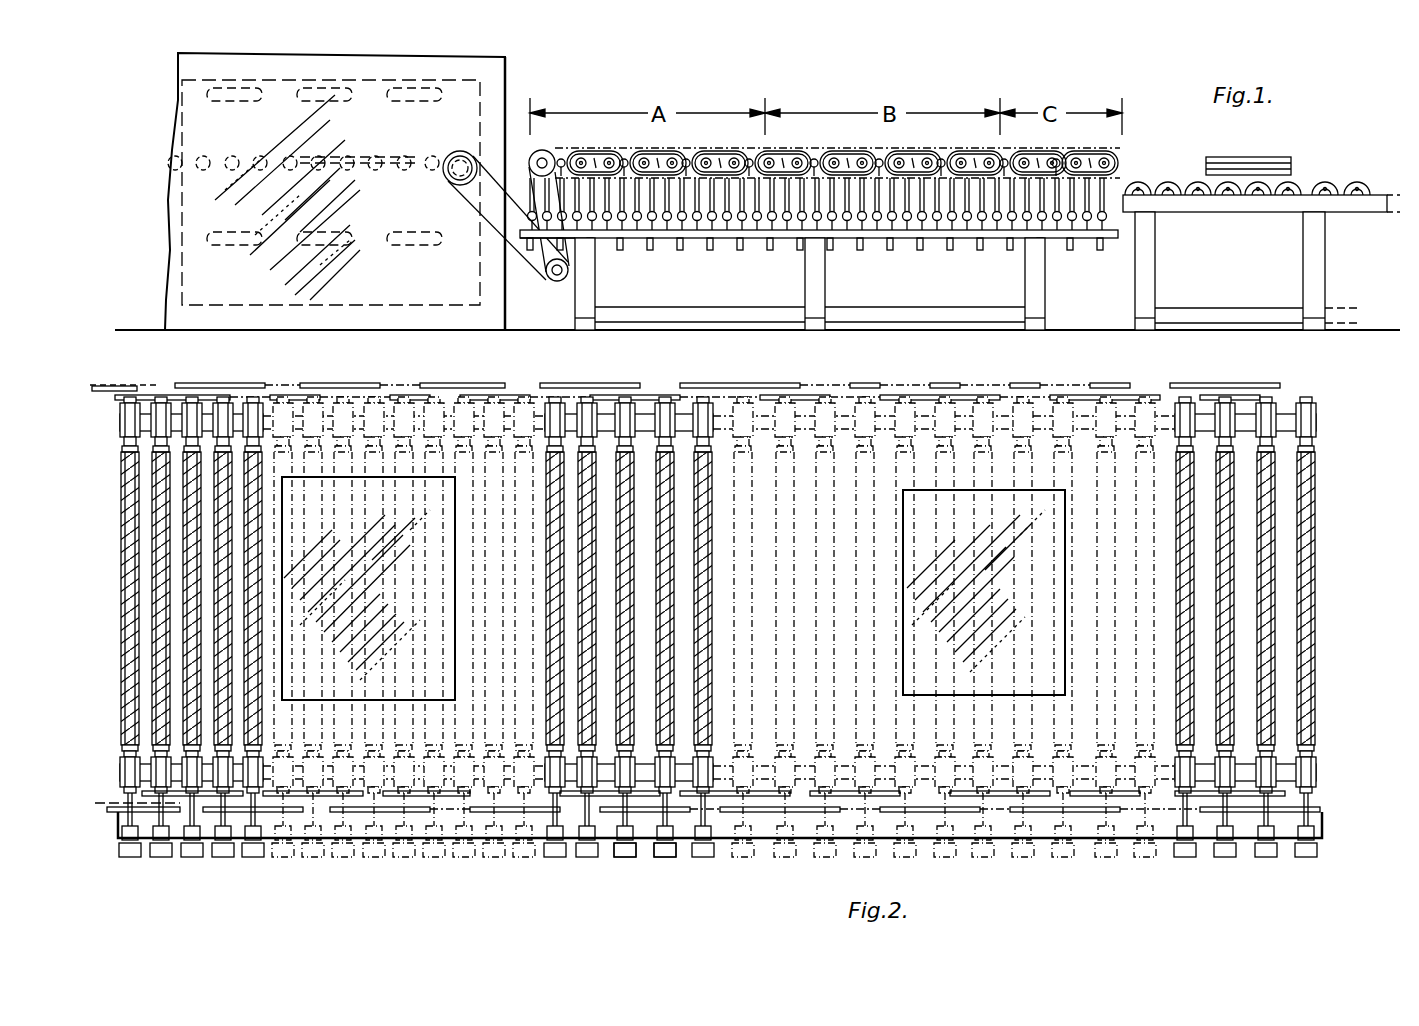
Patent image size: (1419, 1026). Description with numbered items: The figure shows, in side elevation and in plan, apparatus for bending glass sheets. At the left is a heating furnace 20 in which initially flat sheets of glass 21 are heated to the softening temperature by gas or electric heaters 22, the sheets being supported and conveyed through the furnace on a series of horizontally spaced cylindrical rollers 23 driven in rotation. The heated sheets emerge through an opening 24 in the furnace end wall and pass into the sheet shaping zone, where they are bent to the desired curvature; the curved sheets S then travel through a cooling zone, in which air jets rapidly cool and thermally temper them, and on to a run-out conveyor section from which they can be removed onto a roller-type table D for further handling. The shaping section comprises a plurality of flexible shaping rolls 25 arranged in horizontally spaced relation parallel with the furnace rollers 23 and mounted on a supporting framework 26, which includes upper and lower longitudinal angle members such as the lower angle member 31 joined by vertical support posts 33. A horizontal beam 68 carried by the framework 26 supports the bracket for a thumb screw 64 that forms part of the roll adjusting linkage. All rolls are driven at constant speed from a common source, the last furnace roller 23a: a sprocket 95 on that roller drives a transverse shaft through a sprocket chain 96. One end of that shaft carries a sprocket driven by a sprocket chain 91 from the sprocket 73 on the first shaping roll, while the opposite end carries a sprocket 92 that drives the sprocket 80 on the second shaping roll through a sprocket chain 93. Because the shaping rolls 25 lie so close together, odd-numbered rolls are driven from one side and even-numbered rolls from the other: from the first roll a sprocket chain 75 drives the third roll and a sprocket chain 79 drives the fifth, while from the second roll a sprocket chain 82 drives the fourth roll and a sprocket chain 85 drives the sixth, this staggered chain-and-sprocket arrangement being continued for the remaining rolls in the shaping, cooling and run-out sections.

In FIG. 1, the heating furnace 20 is at (315, 68).
In FIG. 1, the sheets of glass 21 is at (355, 160).
In FIG. 2, the sheets of glass 21 is at (370, 490).
In FIG. 1, the heaters 22 is at (295, 102).
In FIG. 1, the cylindrical rollers 23 is at (402, 175).
In FIG. 1, the last furnace roller 23a is at (458, 156).
In FIG. 1, the opening 24 is at (505, 155).
In FIG. 2, the flexible shaping rolls 25 is at (153, 600).
In FIG. 1, the supporting framework 26 is at (908, 303).
In FIG. 1, the longitudinally disposed angle member 31 is at (698, 315).
In FIG. 1, the vertical support posts 33 is at (600, 300).
In FIG. 2, the thumb screw 64 is at (660, 860).
In FIG. 1, the horizontal beam 68 is at (988, 248).
In FIG. 1, the sprocket 73 is at (528, 150).
In FIG. 2, the sprocket chain 75 is at (155, 392).
In FIG. 2, the sprocket chain 79 is at (207, 382).
In FIG. 1, the sprocket 80 is at (546, 157).
In FIG. 1, the sprocket chain 82 is at (596, 152).
In FIG. 2, the sprocket chain 82 is at (193, 800).
In FIG. 1, the sprocket chain 85 is at (660, 150).
In FIG. 2, the sprocket chain 85 is at (253, 812).
In FIG. 2, the sprocket chain 91 is at (107, 390).
In FIG. 1, the sprocket 92 is at (556, 278).
In FIG. 1, the sprocket chain 93 is at (580, 256).
In FIG. 2, the sprocket chain 93 is at (118, 812).
In FIG. 1, the sprocket 95 is at (468, 185).
In FIG. 1, the sprocket chain 96 is at (502, 222).
In FIG. 1, the curved sheets S is at (1242, 167).
In FIG. 2, the curved sheets S is at (955, 515).
In FIG. 1, the roller-type table D is at (1336, 178).